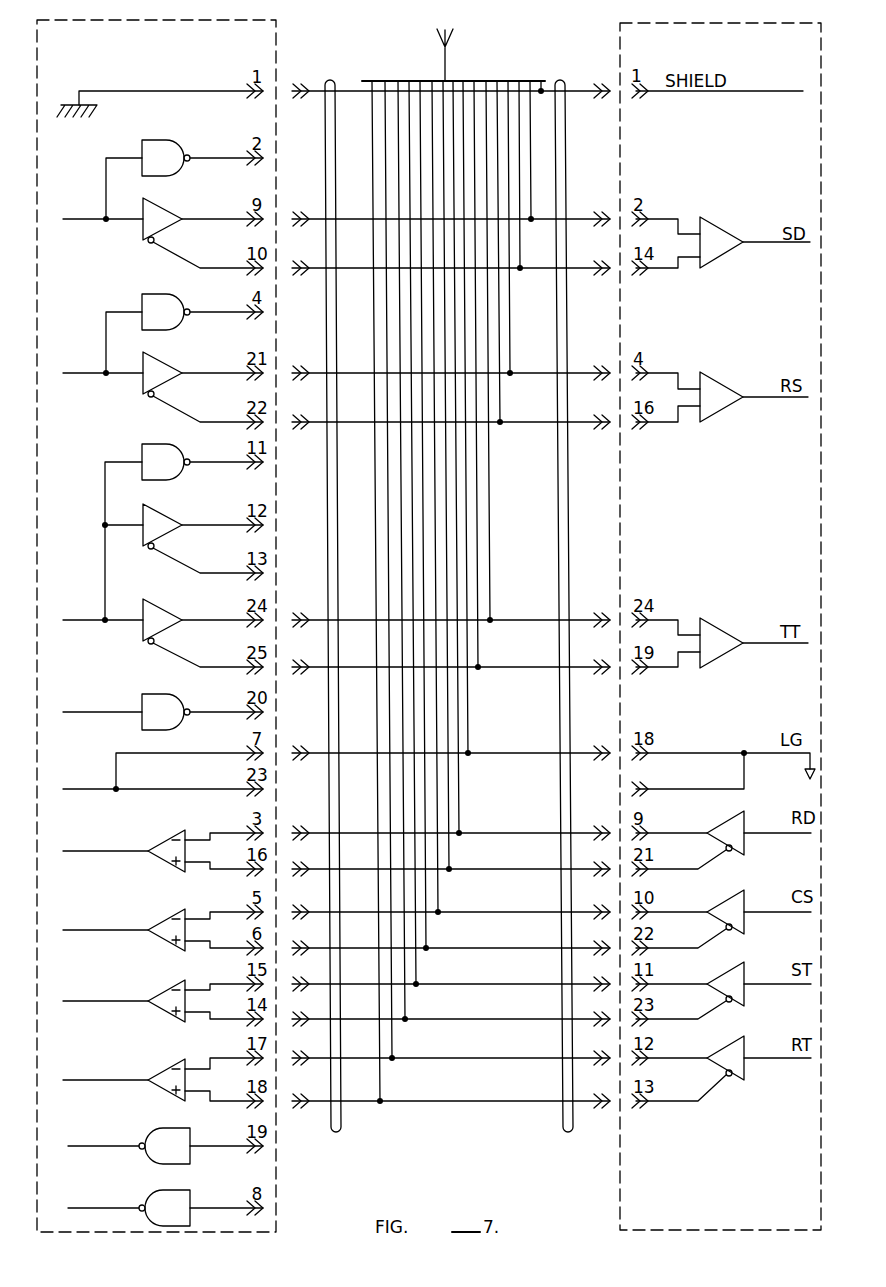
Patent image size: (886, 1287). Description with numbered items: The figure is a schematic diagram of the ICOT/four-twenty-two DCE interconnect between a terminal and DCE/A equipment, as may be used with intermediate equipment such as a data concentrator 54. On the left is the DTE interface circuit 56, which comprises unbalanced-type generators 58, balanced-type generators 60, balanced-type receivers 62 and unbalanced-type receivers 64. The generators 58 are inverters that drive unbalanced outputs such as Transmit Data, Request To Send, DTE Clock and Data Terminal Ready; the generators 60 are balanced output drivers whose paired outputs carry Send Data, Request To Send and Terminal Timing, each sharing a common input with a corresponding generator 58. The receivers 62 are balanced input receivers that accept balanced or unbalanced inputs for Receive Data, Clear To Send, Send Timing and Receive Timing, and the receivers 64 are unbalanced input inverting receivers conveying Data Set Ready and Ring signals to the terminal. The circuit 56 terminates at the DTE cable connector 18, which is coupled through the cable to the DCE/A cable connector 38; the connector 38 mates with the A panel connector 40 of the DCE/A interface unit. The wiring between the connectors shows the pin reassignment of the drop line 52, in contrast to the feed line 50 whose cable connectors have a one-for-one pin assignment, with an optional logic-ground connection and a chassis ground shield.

The third type cable connector 18 is at (285, 82).
The sixth type cable connector 38 is at (602, 82).
The A panel connector 40 is at (440, 36).
The feed line 50 is at (447, 70).
The drop line 52 is at (333, 79).
The data concentrator 54 is at (613, 29).
The DTE interface circuit 56 is at (262, 22).
The type RS-232C generator 58 is at (168, 141).
The type RS-422 generator 60 is at (165, 206).
The type RS-422 receiver 62 is at (163, 832).
The type RS-232C receiver 64 is at (172, 1129).